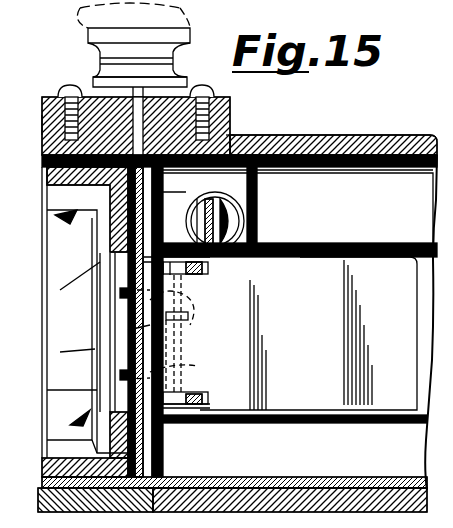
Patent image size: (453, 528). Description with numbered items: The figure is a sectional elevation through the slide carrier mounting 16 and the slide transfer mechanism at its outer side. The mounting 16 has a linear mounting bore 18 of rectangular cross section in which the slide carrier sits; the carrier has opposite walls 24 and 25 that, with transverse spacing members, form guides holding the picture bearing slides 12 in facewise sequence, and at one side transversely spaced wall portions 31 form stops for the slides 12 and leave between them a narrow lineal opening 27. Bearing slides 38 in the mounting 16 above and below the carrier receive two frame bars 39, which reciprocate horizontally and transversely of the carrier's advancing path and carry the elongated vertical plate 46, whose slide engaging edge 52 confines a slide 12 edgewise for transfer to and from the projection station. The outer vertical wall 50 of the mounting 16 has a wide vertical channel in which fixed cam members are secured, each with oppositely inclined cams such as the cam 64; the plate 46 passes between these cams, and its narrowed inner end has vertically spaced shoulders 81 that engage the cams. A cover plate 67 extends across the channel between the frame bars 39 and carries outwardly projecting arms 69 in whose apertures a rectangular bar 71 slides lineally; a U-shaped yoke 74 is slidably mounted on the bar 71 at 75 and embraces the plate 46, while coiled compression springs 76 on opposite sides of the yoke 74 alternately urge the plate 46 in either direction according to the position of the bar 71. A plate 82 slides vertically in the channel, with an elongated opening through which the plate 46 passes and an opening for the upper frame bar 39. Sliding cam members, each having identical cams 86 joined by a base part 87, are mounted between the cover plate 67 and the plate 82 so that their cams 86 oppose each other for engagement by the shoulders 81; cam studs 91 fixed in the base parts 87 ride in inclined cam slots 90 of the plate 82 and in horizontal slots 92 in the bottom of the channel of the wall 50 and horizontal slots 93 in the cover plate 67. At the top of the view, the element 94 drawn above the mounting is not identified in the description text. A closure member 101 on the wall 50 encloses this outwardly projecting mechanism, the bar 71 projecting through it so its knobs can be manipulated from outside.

The picture bearing slide 12 is at (52, 250).
The slide carrier mounting 16 is at (44, 100).
The mounting bore 18 is at (42, 170).
The wall 24 is at (52, 192).
The wall 25 is at (58, 458).
The opening 27 is at (58, 387).
The wall portion 31 is at (108, 214).
The bearing slide 38 is at (46, 124).
The frame bar 39 is at (408, 171).
The plate 46 is at (388, 262).
The outer vertical wall 50 is at (110, 244).
The vertical edge 52 is at (95, 349).
The cam 64 is at (206, 173).
The cover plate 67 is at (167, 462).
The arm 69 is at (233, 137).
The bar 71 is at (258, 200).
The yoke 74 is at (258, 183).
The sliding mount 75 is at (258, 222).
The coiled compression spring 76 is at (258, 238).
The shoulder 81 is at (203, 267).
The plate 82 is at (88, 97).
The cam 86 is at (203, 278).
The base part 87 is at (160, 325).
The cam slot 90 is at (128, 330).
The cam stud 91 is at (200, 296).
The horizontal slot 92 is at (127, 290).
The horizontal slot 93 is at (170, 308).
The knob 94 is at (96, 34).
The closure member 101 is at (388, 137).